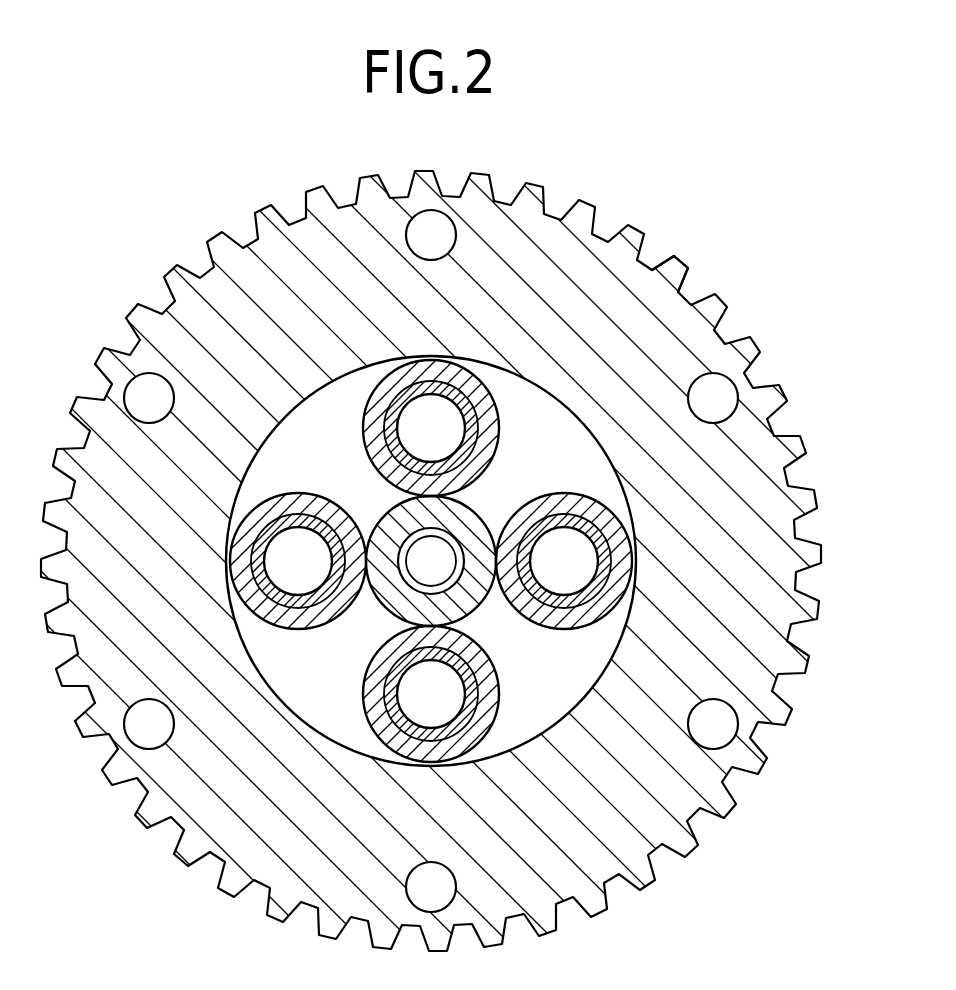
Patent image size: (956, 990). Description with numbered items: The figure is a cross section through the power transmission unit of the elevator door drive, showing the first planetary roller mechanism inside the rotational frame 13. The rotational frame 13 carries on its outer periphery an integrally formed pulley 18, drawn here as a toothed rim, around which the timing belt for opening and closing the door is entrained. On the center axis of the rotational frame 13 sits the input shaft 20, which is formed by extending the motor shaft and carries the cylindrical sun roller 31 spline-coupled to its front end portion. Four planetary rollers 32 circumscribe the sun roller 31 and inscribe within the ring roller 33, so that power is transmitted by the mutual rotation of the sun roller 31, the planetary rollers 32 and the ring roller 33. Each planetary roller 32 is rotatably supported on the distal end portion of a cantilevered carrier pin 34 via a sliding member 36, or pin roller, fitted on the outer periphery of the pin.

The rotational frame 13 is at (688, 323).
The pulley 18 is at (684, 259).
The input shaft 20 is at (431, 563).
The sun roller 31 is at (480, 604).
The planetary rollers 32 is at (477, 461).
The ring roller 33 is at (600, 455).
The carrier pin 34 is at (445, 422).
The sliding member 36 is at (380, 427).